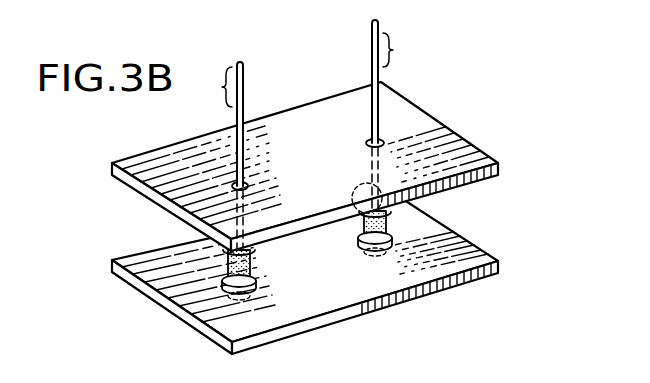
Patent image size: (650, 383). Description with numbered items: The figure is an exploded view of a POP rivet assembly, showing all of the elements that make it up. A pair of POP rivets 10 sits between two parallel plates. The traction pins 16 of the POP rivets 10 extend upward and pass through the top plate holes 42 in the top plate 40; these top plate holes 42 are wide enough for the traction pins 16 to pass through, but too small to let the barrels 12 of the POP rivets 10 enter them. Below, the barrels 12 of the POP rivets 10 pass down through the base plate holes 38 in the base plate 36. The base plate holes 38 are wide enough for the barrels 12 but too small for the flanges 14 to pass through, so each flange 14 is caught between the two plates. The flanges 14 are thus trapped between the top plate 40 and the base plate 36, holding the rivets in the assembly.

The POP rivet 10 is at (315, 70).
The barrel 12 is at (227, 262).
The flange 14 is at (221, 252).
The traction pin 16 is at (246, 82).
The base plate 36 is at (466, 252).
The base plate hole 38 is at (223, 292).
The top plate 40 is at (444, 135).
The top plate hole 42 is at (437, 100).